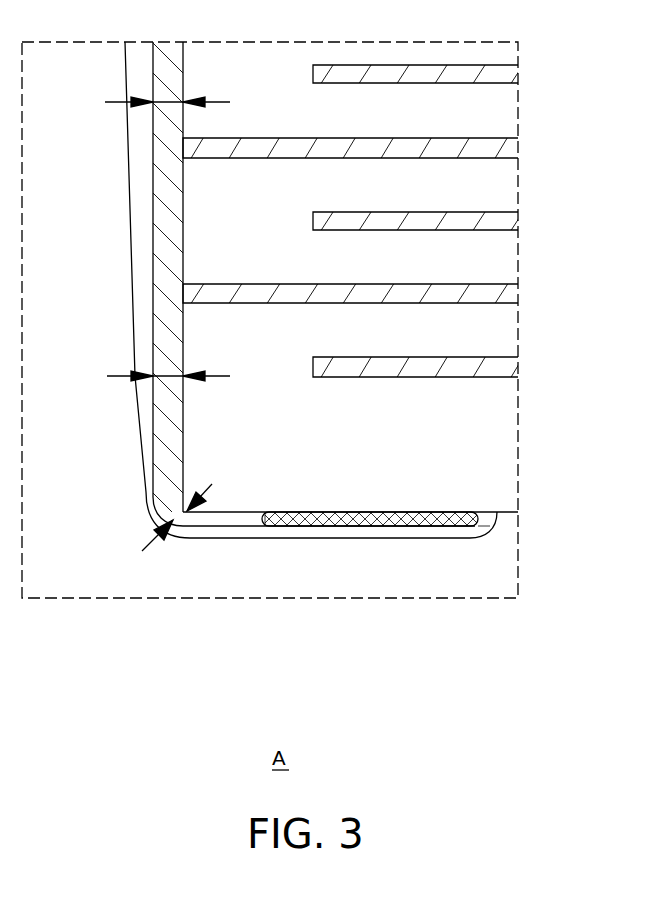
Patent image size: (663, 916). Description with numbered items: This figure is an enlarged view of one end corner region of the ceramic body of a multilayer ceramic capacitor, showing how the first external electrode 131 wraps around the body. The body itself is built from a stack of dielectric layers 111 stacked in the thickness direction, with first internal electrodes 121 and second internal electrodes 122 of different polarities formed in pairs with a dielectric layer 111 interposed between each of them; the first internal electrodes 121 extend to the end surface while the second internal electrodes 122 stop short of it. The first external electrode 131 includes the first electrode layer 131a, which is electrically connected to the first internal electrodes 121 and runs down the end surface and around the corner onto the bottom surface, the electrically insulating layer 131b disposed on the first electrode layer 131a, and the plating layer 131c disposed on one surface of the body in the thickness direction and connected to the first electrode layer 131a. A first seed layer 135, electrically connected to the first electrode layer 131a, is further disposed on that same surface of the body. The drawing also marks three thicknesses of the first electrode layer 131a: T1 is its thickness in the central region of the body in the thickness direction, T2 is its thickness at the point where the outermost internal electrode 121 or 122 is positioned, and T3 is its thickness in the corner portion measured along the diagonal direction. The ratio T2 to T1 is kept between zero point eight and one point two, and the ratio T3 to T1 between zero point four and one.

The dielectric layer 111 is at (498, 185).
The first internal electrode 121 is at (480, 147).
The second internal electrode 122 is at (478, 222).
The first external electrode 131 is at (437, 661).
The first electrode layer 131a is at (235, 540).
The electrically insulating layer 131b is at (252, 540).
The plating layer 131c is at (388, 540).
The first seed layer 135 is at (458, 540).
The thickness of the electrode layer in the central region T1 is at (167, 97).
The thickness of the electrode layer at the outermost internal electrode T2 is at (167, 375).
The thickness of the electrode layer in the corner portion T3 is at (167, 514).